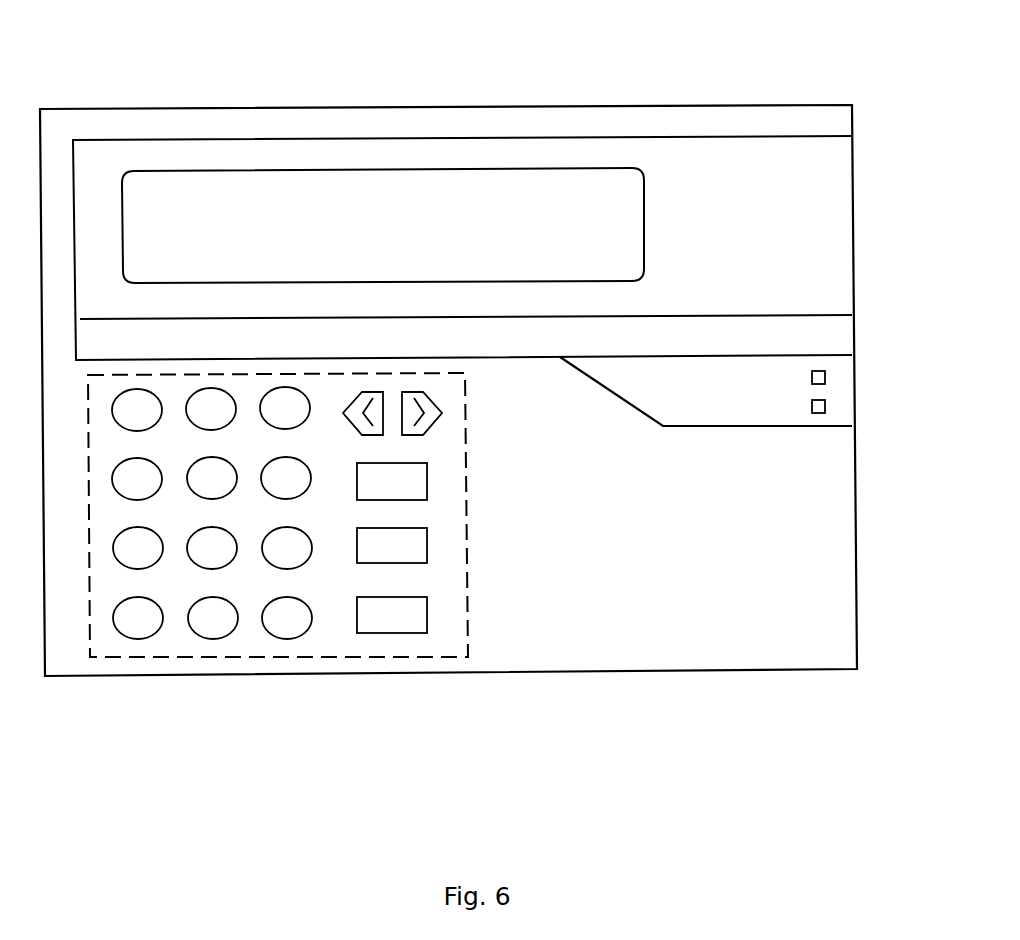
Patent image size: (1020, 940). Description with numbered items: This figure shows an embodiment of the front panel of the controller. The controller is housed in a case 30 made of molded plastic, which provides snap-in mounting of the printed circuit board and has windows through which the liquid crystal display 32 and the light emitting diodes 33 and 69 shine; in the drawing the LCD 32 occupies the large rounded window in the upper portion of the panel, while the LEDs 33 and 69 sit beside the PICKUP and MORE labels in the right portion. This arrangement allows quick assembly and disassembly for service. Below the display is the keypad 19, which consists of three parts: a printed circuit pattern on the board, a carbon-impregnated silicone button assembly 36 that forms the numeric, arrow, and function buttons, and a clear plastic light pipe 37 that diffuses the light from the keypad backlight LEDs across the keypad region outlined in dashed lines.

The case 30 is at (800, 673).
The liquid crystal display 32 is at (406, 159).
The light emitting diode 33 is at (830, 379).
The light emitting diode 69 is at (835, 408).
The keypad 19 is at (249, 595).
The carbon-impregnated silicone button assembly 36 is at (298, 637).
The clear plastic light pipe 37 is at (468, 660).